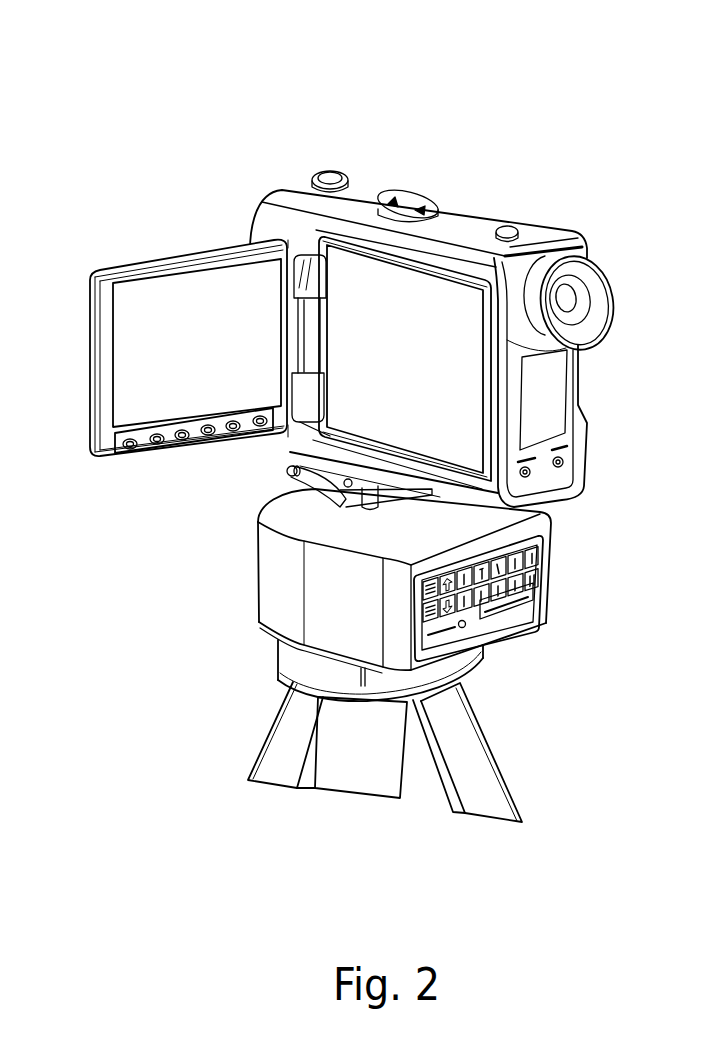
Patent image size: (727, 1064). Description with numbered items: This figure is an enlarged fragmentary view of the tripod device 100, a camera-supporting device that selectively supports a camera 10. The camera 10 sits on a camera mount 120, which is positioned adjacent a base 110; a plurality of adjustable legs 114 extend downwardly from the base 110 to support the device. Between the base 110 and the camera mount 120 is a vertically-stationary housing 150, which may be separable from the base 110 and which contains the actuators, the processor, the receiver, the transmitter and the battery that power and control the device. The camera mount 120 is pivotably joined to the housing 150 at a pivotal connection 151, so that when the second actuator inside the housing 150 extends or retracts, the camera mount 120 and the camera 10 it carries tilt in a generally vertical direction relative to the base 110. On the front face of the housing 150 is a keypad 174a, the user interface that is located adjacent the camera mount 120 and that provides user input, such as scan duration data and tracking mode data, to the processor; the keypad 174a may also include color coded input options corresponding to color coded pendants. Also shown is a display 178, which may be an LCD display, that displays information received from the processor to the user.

The tripod device 100 is at (110, 119).
The camera 10 is at (538, 233).
The camera mount 120 is at (218, 473).
The pivotal connection 151 is at (277, 475).
The housing 150 is at (224, 597).
The keypad 174a is at (542, 557).
The display 178 is at (532, 602).
The base 110 is at (478, 670).
The adjustable legs 114 is at (493, 787).